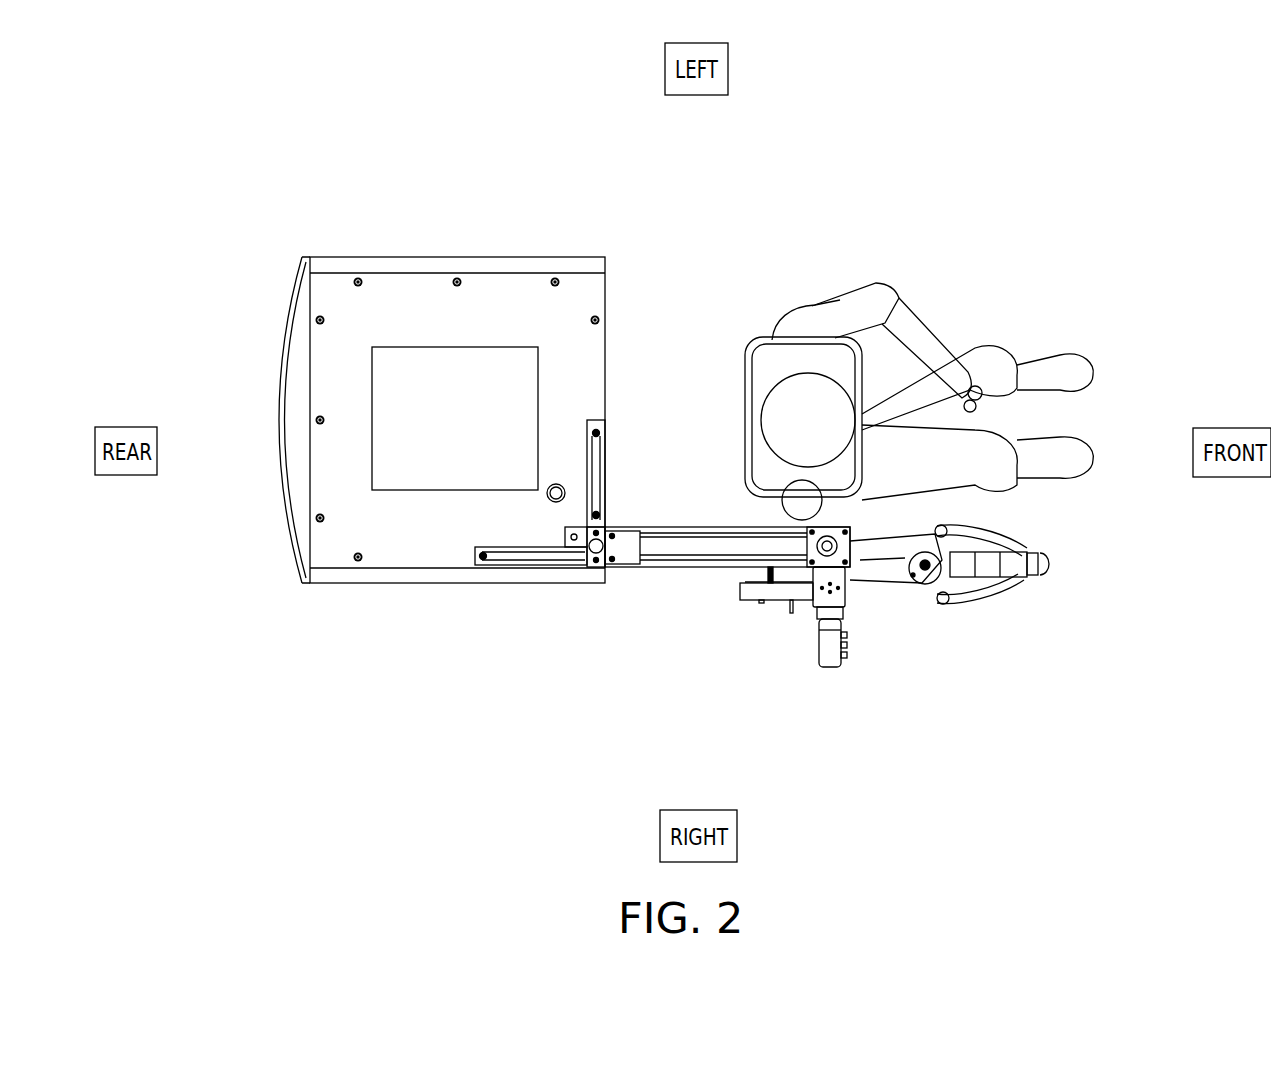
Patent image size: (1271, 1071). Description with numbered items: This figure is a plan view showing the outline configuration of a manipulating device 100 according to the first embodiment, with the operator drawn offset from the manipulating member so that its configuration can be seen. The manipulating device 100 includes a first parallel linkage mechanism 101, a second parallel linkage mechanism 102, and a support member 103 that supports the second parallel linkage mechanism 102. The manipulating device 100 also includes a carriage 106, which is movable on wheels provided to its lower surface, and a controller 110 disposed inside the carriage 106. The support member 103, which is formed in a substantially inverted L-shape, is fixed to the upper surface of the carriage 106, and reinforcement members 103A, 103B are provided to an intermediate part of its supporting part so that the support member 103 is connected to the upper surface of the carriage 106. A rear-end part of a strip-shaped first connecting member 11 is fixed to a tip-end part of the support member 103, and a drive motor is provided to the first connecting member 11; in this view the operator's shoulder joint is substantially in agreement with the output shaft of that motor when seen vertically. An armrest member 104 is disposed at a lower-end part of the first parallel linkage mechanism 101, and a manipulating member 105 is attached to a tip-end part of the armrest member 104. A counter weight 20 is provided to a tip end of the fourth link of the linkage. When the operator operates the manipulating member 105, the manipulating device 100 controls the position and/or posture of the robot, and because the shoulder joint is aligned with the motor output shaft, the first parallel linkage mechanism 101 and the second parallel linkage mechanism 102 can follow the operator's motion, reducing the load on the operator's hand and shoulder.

The manipulating device 100 is at (711, 34).
The first connecting member 11 is at (807, 527).
The armrest member 104 is at (885, 567).
The carriage 106 is at (410, 545).
The controller 110 is at (488, 490).
The reinforcement member 103B is at (588, 425).
The reinforcement member 103A is at (538, 556).
The support member 103 is at (700, 546).
The counter weight 20 is at (757, 600).
The second parallel linkage mechanism 102 is at (850, 595).
The first parallel linkage mechanism 101 is at (847, 614).
The manipulating member 105 is at (1019, 581).